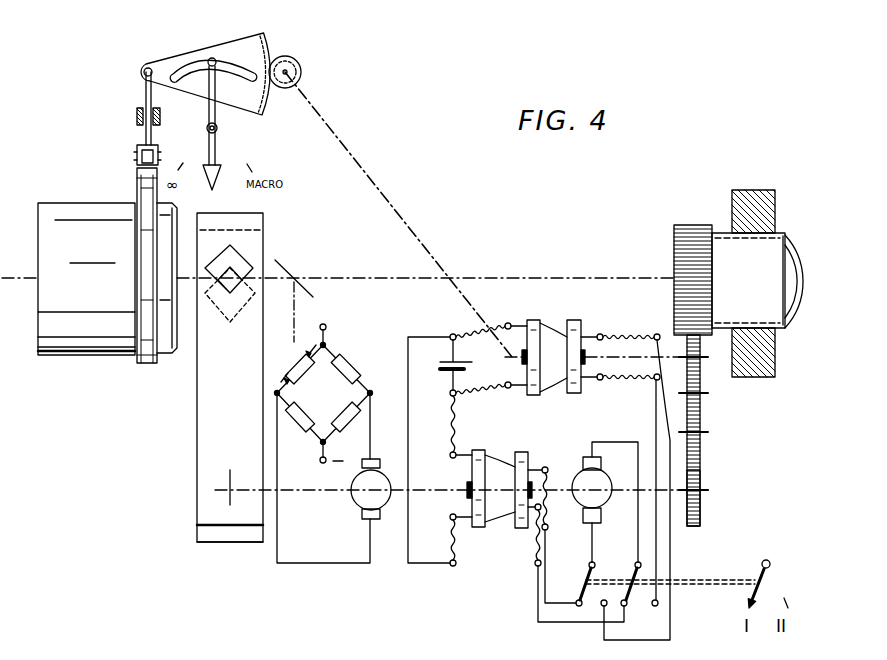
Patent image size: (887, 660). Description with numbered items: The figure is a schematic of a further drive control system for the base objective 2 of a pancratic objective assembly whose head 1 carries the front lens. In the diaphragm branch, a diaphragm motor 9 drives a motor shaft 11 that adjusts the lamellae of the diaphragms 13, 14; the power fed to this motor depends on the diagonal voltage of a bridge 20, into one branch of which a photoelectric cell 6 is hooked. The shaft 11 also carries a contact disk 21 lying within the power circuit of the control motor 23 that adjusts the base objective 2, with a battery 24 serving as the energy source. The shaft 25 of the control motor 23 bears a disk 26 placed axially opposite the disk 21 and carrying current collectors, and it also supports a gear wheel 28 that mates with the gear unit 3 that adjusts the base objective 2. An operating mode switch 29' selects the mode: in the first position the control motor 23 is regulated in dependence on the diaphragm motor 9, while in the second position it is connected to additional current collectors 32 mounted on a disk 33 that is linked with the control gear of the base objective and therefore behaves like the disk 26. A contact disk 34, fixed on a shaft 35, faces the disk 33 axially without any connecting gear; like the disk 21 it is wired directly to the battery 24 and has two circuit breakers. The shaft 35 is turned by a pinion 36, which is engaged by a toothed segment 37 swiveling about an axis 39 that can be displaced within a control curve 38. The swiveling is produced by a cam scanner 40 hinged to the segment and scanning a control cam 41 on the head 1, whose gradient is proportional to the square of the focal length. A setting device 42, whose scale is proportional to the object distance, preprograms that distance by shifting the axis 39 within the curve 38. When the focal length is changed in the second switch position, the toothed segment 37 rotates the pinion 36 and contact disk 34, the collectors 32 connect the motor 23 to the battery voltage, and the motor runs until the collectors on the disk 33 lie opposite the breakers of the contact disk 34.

The head 1 is at (87, 332).
The base objective 2 is at (727, 250).
The gear unit 3 is at (712, 417).
The photoelectric cell 6 is at (296, 367).
The diaphragm motor 9 is at (358, 502).
The motor shaft 11 is at (299, 492).
The diaphragm 13 is at (258, 222).
The diaphragm 14 is at (208, 540).
The bridge 20 is at (324, 442).
The contact disk 21 is at (479, 528).
The control motor 23 is at (582, 478).
The battery 24 is at (440, 364).
The shaft 25 is at (622, 492).
The disk 26 is at (521, 530).
The gear wheel 28 is at (702, 505).
The operating mode switch 29' is at (678, 599).
The current collectors 32 is at (557, 330).
The disk 33 is at (576, 320).
The contact disk 34 is at (533, 320).
The shaft 35 is at (404, 221).
The pinion 36 is at (292, 67).
The toothed segment 37 is at (242, 50).
The control curve 38 is at (180, 72).
The axis 39 is at (213, 58).
The cam scanner 40 is at (146, 136).
The control cam 41 is at (148, 362).
The setting device 42 is at (217, 157).